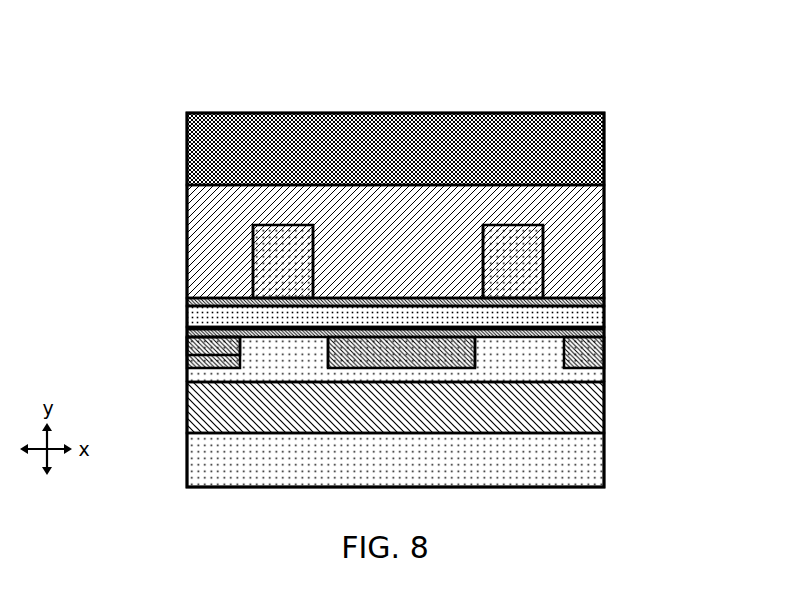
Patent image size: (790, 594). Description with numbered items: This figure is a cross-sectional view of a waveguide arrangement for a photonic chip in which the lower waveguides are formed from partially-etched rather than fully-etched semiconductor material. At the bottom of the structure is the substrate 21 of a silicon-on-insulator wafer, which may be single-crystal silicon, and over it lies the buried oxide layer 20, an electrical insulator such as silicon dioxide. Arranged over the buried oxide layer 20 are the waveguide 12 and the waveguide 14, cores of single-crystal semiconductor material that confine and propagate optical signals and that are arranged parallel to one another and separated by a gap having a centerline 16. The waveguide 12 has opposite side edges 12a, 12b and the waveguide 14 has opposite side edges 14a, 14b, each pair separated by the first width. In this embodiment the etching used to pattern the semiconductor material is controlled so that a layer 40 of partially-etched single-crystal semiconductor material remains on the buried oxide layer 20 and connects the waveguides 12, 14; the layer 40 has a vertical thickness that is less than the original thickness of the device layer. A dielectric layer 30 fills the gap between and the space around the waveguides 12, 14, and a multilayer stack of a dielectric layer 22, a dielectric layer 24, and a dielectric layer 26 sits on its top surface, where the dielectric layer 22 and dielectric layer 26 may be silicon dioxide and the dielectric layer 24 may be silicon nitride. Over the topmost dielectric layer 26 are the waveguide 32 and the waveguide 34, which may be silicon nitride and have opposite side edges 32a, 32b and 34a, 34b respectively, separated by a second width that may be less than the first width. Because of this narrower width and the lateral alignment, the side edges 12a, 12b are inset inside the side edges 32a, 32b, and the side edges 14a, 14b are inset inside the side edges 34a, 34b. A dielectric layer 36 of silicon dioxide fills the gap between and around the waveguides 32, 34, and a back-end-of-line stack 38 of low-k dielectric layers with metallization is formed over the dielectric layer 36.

The waveguide 12 is at (265, 357).
The side edge of waveguide 12 12a is at (193, 355).
The side edge of waveguide 12 12b is at (330, 355).
The waveguide 14 is at (523, 358).
The side edge of waveguide 14 14a is at (563, 352).
The side edge of waveguide 14 14b is at (475, 340).
The centerline of the gap 16 is at (400, 365).
The buried oxide (BOX) layer 20 is at (202, 405).
The substrate 21 is at (205, 466).
The dielectric layer 22 is at (590, 331).
The dielectric layer 24 is at (203, 317).
The dielectric layer 26 is at (590, 302).
The dielectric layer 30 is at (205, 350).
The waveguide 32 is at (268, 246).
The side edge of waveguide 32 32a is at (252, 272).
The side edge of waveguide 32 32b is at (313, 243).
The waveguide 34 is at (530, 245).
The side edge of waveguide 34 34a is at (543, 270).
The side edge of waveguide 34 34b is at (482, 263).
The dielectric layer 36 is at (198, 208).
The back-end-of-line stack 38 is at (583, 142).
The layer of partially-etched single-crystal semiconductor material 40 is at (570, 377).